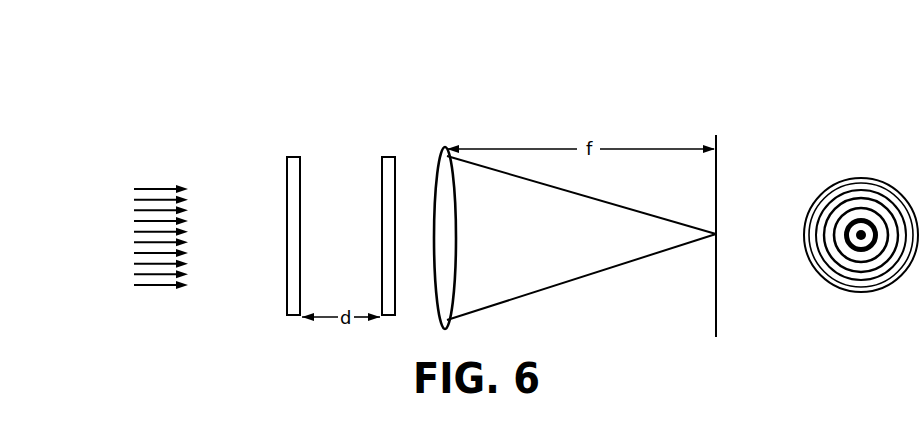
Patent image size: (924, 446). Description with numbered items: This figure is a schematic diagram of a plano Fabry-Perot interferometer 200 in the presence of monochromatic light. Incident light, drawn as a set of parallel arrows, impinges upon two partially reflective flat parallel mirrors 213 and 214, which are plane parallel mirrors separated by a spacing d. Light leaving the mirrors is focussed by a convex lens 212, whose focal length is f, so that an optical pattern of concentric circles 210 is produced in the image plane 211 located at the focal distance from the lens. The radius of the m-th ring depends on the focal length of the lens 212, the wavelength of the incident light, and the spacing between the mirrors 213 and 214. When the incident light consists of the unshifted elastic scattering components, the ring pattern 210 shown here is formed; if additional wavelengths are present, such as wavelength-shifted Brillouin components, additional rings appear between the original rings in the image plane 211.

The plano Fabry-Perot interferometer 200 is at (200, 85).
The optical pattern of concentric circles 210 is at (862, 203).
The image plane 211 is at (722, 221).
The convex lens 212 is at (454, 221).
The partially reflective flat parallel mirror 213 is at (381, 214).
The partially reflective flat parallel mirror 214 is at (289, 214).